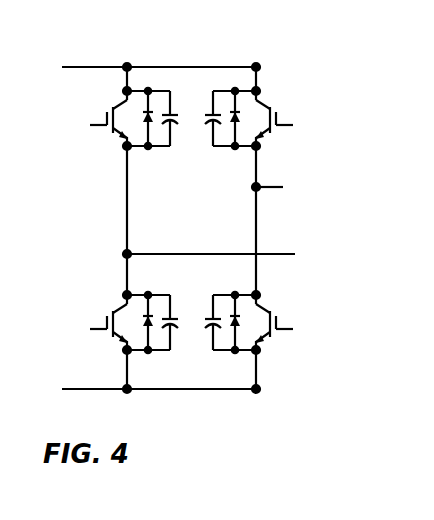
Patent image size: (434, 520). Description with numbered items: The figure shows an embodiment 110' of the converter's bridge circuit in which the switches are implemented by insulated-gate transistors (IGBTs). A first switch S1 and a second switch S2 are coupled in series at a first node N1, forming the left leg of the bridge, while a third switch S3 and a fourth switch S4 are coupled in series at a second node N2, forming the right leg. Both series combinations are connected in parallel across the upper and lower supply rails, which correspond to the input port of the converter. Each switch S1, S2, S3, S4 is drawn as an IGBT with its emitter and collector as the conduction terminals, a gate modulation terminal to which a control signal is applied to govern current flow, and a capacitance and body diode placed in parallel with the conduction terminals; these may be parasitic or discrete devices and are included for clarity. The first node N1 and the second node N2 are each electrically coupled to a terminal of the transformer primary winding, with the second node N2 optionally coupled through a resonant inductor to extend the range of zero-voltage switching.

The bridge circuit embodiment 110' is at (188, 203).
The first switch S1 is at (113, 108).
The second switch S2 is at (113, 312).
The third switch S3 is at (270, 105).
The fourth switch S4 is at (270, 309).
The first node N1 is at (130, 251).
The second node N2 is at (253, 190).